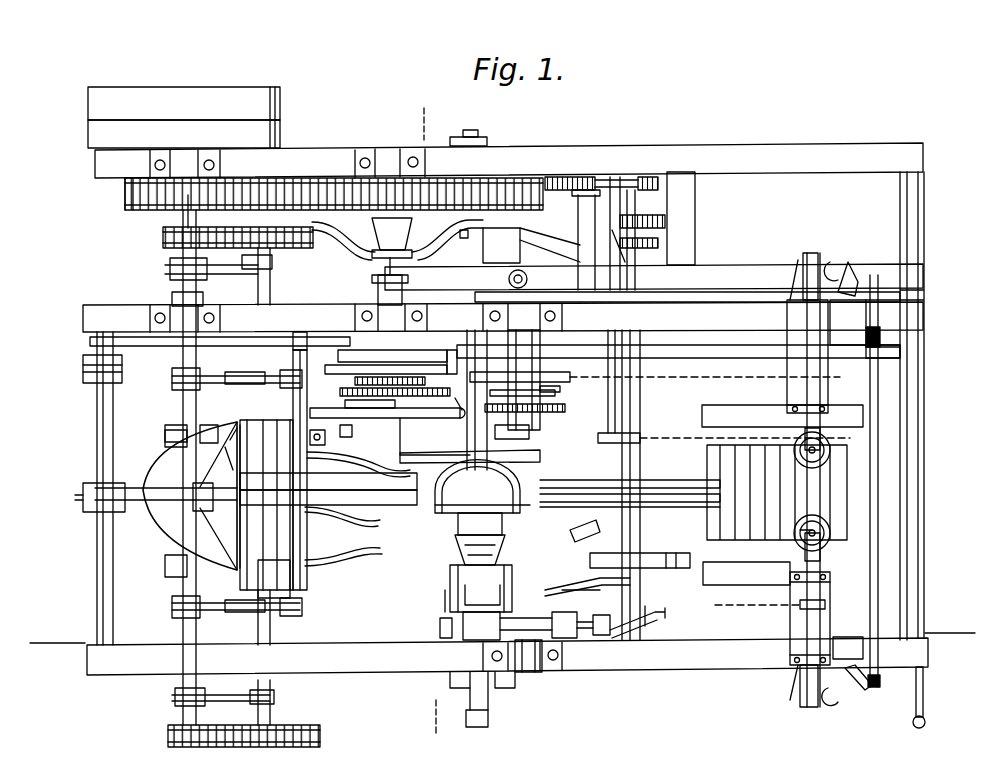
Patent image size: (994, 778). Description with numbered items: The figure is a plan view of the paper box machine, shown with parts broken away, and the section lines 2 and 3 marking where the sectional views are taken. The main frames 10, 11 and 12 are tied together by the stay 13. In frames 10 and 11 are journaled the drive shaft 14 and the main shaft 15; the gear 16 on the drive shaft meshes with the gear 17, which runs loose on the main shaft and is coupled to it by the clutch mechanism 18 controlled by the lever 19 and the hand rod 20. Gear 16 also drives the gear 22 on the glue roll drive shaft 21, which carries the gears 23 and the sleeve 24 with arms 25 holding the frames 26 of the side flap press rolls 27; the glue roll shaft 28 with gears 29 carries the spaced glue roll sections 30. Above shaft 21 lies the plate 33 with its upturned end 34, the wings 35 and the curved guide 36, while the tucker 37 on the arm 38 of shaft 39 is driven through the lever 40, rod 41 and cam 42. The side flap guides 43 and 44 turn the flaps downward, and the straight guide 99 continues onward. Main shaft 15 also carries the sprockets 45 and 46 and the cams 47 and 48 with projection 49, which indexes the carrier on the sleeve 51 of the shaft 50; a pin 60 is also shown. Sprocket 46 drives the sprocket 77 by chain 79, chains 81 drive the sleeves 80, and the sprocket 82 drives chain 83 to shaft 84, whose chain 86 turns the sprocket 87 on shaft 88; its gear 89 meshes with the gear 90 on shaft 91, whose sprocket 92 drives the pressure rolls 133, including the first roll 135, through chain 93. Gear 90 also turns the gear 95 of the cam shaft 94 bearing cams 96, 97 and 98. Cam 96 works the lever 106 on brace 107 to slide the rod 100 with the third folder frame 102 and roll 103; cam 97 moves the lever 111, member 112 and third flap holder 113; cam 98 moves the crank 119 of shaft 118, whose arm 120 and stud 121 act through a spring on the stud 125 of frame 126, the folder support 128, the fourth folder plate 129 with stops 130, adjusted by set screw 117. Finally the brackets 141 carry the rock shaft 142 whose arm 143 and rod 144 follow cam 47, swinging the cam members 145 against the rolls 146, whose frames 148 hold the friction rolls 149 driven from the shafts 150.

The section line 2— 2 is at (503, 638).
The section line 3— 3 is at (430, 412).
The main frame 10 is at (98, 175).
The main frame 11 is at (84, 318).
The main frame 12 is at (146, 676).
The stay 13 is at (926, 418).
The drive shaft 14 is at (185, 220).
The main shaft 15 is at (376, 295).
The gear 16 is at (140, 211).
The gear 17 is at (352, 180).
The clutch mechanism 18 is at (378, 232).
The lever 19 is at (700, 275).
The hand rod 20 is at (924, 696).
The glue roll drive shaft 21 is at (176, 716).
The gear 22 is at (126, 202).
The gears 23 is at (172, 250).
The sleeve 24 is at (182, 404).
The arms 25 is at (208, 376).
The frames 26 is at (238, 384).
The side flap press rolls 27 is at (296, 404).
The glue roll shaft 28 is at (272, 712).
The gears 29 is at (265, 250).
The glue roll sections 30 is at (166, 420).
The plate 33 is at (205, 511).
The upwardly extending end 34 is at (218, 472).
The wings 35 is at (160, 475).
The curved guide 36 is at (318, 508).
The tucker 37 is at (180, 508).
The arm 38 is at (132, 506).
The shaft 39 is at (97, 420).
The lever 40 is at (84, 366).
The rod 41 is at (268, 337).
The cam 42 is at (422, 358).
The side flap guide 43 is at (320, 464).
The side flap guide 44 is at (330, 540).
The sprocket 45 is at (356, 380).
The sprocket 46 is at (350, 402).
The cam 47 is at (418, 378).
The cam 48 is at (438, 416).
The projection 49 is at (357, 432).
The shaft 50 is at (532, 430).
The sleeve 51 is at (490, 428).
The pin 60 is at (330, 437).
The sprocket wheel 77 is at (545, 400).
The chain 79 is at (464, 405).
The sleeves 80 is at (788, 332).
The chains 81 is at (660, 380).
The sprocket wheel 82 is at (560, 414).
The chain 83 is at (567, 408).
The shaft 84 is at (501, 245).
The chain 86 is at (501, 277).
The sprocket 87 is at (586, 292).
The rotatable shaft 88 is at (578, 210).
The gear 89 is at (586, 165).
The gear 90 is at (612, 177).
The shaft 91 is at (618, 258).
The sprocket 92 is at (616, 444).
The drive chain 93 is at (684, 443).
The cam shaft 94 is at (638, 218).
The gear 95 is at (648, 177).
The cam 96 is at (666, 222).
The cam 97 is at (668, 568).
The cam 98 is at (660, 616).
The straight guide 99 is at (435, 452).
The rod 100 is at (470, 256).
The third folder frame 102 is at (577, 486).
The roll 103 is at (520, 508).
The lever 106 is at (544, 236).
The brace 107 is at (692, 182).
The lever 111 is at (581, 580).
The member 112 is at (572, 580).
The third flap holder 113 is at (590, 535).
The set screw 117 is at (490, 716).
The shaft 118 is at (540, 616).
The crank 119 is at (588, 642).
The arm 120 is at (462, 640).
The stud 121 is at (444, 624).
The stud 125 is at (444, 592).
The frame 126 is at (452, 573).
The folder support 128 is at (458, 548).
The fourth folder plate 129 is at (502, 530).
The stop members 130 is at (504, 550).
The pressure rolls 133 is at (840, 486).
The first roll 135 is at (712, 560).
The brackets 141 is at (853, 637).
The rock shaft 142 is at (862, 524).
The depending arm 143 is at (890, 352).
The rod 144 is at (672, 352).
The cam members 145 is at (862, 268).
The rolls 146 is at (834, 722).
The frames 148 is at (818, 430).
The friction rolls 149 is at (830, 452).
The shafts 150 is at (810, 258).